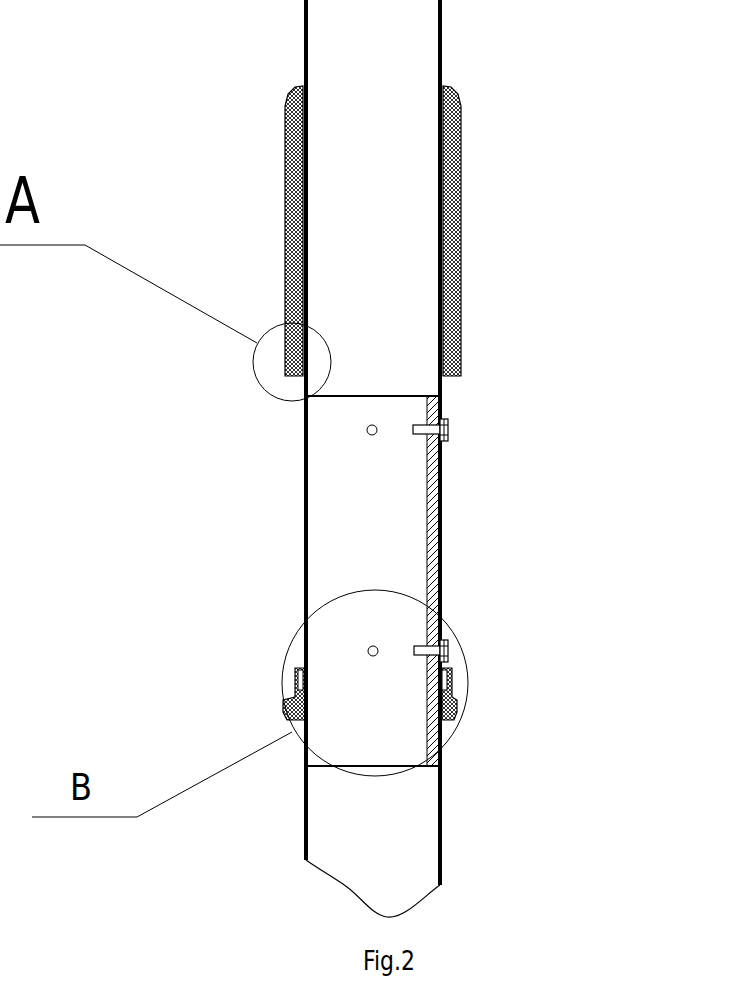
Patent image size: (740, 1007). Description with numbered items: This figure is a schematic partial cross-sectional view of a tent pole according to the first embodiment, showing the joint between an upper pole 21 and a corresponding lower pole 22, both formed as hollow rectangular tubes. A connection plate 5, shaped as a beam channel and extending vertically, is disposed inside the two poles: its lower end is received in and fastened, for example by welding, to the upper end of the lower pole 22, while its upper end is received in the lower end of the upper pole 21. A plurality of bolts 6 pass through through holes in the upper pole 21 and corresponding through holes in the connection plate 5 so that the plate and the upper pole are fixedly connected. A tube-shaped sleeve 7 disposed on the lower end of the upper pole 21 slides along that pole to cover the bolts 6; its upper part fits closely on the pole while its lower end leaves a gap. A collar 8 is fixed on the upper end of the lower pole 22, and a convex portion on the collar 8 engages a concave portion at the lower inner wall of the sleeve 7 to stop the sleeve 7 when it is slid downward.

The upper pole 21 is at (393, 42).
The lower pole 22 is at (410, 822).
The sleeve 7 is at (460, 190).
The connection plate 5 is at (440, 535).
The bolts 6 is at (448, 422).
The collar 8 is at (457, 697).